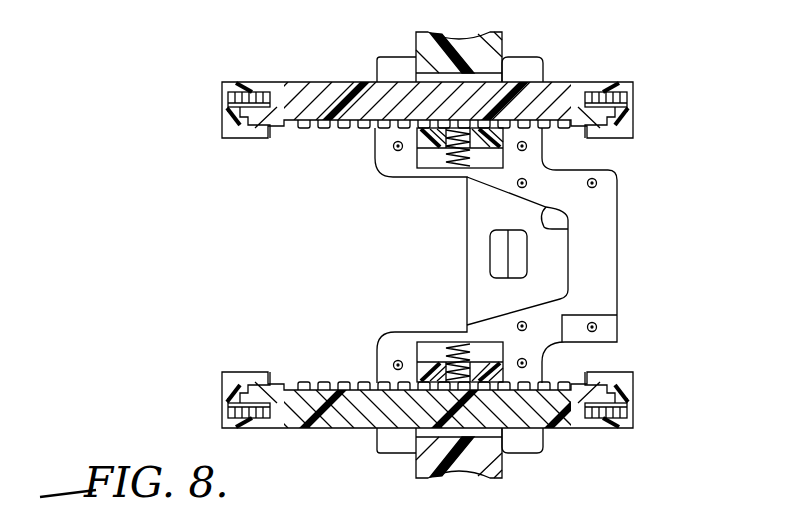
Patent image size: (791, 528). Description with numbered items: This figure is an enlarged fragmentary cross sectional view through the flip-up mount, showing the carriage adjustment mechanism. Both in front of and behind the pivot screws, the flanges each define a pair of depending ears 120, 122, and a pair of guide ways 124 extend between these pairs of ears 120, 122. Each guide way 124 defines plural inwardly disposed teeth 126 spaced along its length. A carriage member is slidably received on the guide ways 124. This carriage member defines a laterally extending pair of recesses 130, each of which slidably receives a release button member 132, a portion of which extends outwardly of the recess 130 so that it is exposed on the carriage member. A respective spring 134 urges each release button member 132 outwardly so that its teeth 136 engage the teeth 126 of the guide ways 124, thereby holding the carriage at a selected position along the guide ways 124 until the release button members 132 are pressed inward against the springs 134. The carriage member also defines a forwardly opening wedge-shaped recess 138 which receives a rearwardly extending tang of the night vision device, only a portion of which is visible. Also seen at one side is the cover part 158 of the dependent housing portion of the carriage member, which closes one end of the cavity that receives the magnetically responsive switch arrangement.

The depending ear 120 is at (222, 118).
The depending ear 122 is at (622, 82).
The guide way 124 is at (312, 82).
The inwardly disposed teeth 126 is at (363, 129).
The recess 130 is at (499, 62).
The release button member 132 is at (501, 50).
The spring 134 is at (449, 160).
The teeth 136 is at (462, 116).
The wedge-shaped recess 138 is at (568, 230).
The cover part 158 is at (612, 330).